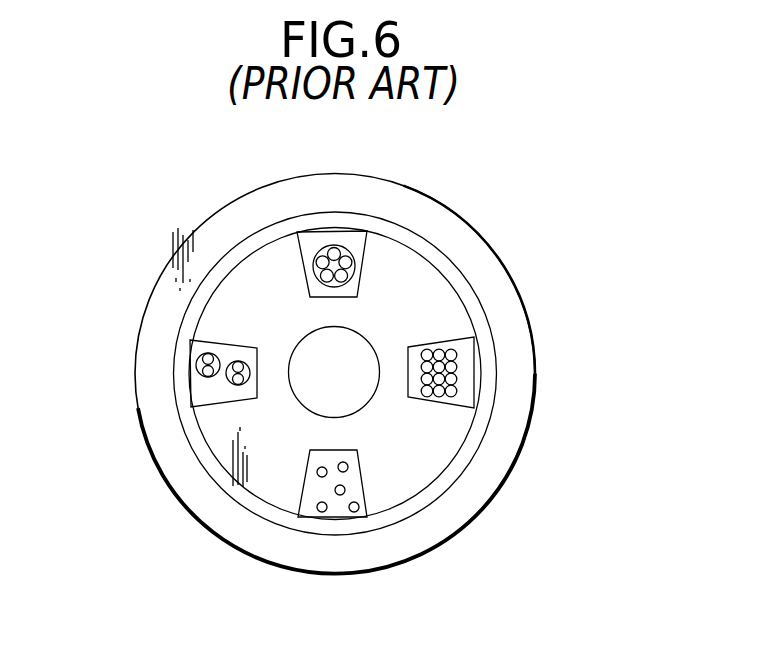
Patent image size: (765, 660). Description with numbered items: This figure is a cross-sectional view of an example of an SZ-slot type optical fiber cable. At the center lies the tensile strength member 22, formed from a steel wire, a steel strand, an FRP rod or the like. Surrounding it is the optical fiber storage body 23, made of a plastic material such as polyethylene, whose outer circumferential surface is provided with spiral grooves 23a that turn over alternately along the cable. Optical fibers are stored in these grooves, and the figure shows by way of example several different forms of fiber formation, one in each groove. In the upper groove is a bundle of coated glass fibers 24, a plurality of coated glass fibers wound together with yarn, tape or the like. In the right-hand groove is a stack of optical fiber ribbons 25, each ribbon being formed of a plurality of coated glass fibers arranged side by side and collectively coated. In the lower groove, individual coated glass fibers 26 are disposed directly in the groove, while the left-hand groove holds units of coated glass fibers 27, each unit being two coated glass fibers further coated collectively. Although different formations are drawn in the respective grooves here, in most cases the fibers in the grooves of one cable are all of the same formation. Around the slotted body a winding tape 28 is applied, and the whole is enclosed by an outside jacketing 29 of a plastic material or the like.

The tensile strength member 22 is at (357, 395).
The optical fiber storage body 23 is at (437, 305).
The spiral grooves 23a is at (365, 262).
The bundle of coated glass fibers 24 is at (333, 257).
The stack of optical fiber ribbons 25 is at (455, 377).
The coated glass fiber 26 is at (322, 512).
The unit of coated glass fibers 27 is at (200, 372).
The winding tape 28 is at (477, 428).
The outside jacketing 29 is at (535, 333).